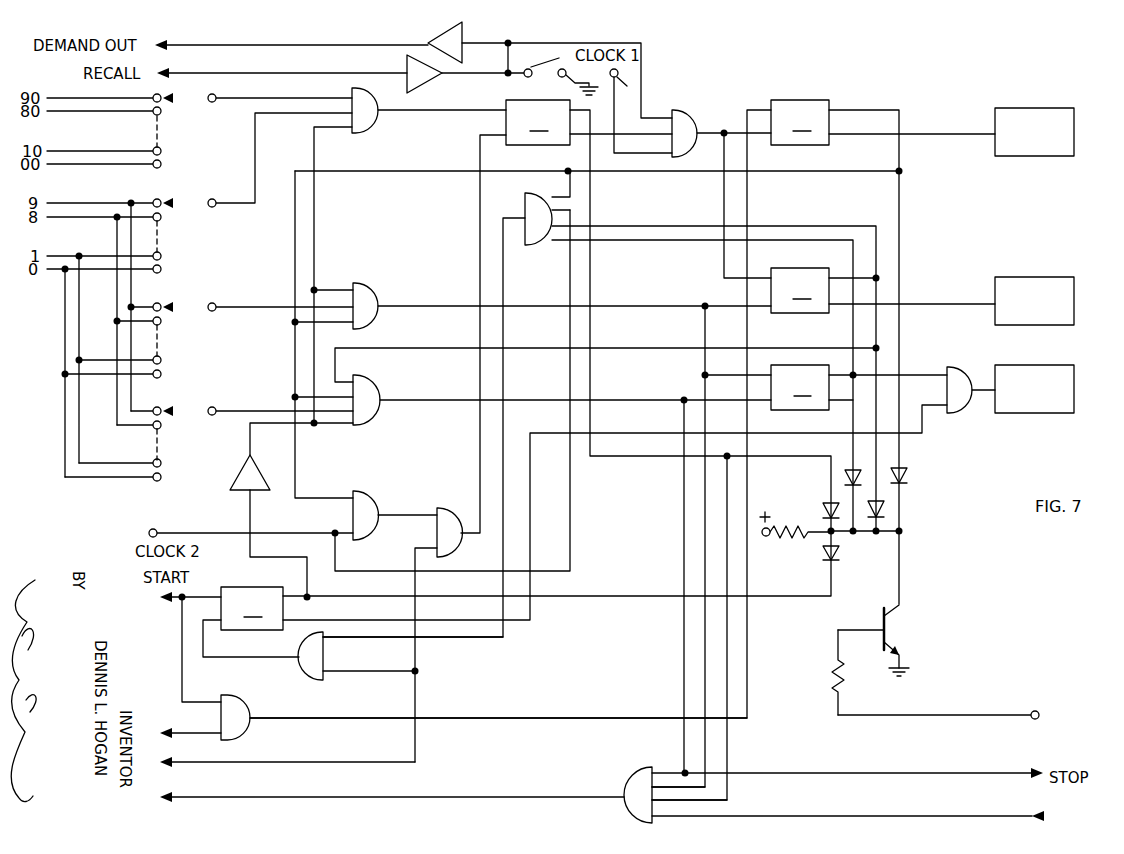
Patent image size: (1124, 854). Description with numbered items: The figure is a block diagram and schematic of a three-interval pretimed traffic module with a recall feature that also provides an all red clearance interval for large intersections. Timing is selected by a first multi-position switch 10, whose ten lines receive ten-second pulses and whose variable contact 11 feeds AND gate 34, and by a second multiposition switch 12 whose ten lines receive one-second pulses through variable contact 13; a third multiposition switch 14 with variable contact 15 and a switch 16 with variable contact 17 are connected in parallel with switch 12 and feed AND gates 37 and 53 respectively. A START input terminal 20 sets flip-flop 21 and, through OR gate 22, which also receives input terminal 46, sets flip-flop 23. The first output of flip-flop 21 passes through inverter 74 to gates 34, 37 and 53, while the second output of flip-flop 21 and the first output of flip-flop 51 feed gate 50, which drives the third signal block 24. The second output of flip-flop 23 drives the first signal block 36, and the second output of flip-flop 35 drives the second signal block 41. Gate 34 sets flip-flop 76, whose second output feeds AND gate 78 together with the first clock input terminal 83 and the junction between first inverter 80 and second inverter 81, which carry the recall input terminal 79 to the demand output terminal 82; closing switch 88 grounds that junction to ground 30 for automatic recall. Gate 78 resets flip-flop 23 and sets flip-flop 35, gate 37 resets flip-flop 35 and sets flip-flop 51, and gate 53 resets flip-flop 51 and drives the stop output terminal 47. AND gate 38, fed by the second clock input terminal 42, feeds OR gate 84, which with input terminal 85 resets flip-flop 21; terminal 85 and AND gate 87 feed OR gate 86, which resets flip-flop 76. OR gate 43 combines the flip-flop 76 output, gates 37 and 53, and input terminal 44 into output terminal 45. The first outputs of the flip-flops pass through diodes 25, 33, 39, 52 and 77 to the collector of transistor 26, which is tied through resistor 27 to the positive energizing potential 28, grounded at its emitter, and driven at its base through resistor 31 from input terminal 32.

The output terminal 82 is at (161, 44).
The recall input terminal 79 is at (163, 73).
The second inverter 81 is at (463, 36).
The first inverter 80 is at (406, 60).
The switch 88 is at (556, 64).
The ground 30 is at (924, 660).
The input terminal 83 is at (619, 78).
The AND gate 78 is at (698, 122).
The flip-flop 23 is at (800, 122).
The block labeled GATE 1 36 is at (1027, 108).
The AND gate 34 is at (375, 96).
The variable contact 11 is at (178, 98).
The first multi-position switch 10 is at (201, 147).
The variable contact 13 is at (178, 203).
The second multiposition switch 12 is at (201, 252).
The flip-flop 76 is at (538, 122).
The AND gate 38 is at (525, 208).
The block labeled GATE 2 41 is at (1028, 277).
The flip-flop 35 is at (800, 290).
The AND gate 37 is at (376, 293).
The variable contact 15 is at (192, 307).
The third multiposition switch 14 is at (201, 357).
The AND gate 53 is at (377, 388).
The variable contact 17 is at (178, 411).
The switch 16 is at (201, 460).
The flip-flop 51 is at (800, 387).
The gate 50 is at (964, 372).
The block labeled GATE 3 24 is at (1042, 365).
The inverter 74 is at (256, 476).
The input terminal 42 is at (157, 529).
The AND gate 87 is at (371, 500).
The OR gate 86 is at (435, 545).
The diode 52 is at (858, 470).
The diode 33 is at (905, 470).
The diode 77 is at (824, 505).
The resistor 27 is at (809, 526).
The diode 39 is at (886, 510).
The source of positive energizing potential 28 is at (770, 536).
The diode 25 is at (840, 555).
The flip-flop 21 is at (252, 608).
The input terminal 20 is at (166, 602).
The OR gate 84 is at (324, 658).
The transistor 26 is at (921, 634).
The resistor 31 is at (841, 672).
The OR gate 22 is at (246, 708).
The input terminal 46 is at (163, 733).
The input terminal 85 is at (162, 764).
The OR gate 43 is at (630, 775).
The output terminal 47 is at (1036, 768).
The output terminal 45 is at (162, 799).
The input terminal 44 is at (1044, 816).
The input terminal 32 is at (1034, 710).